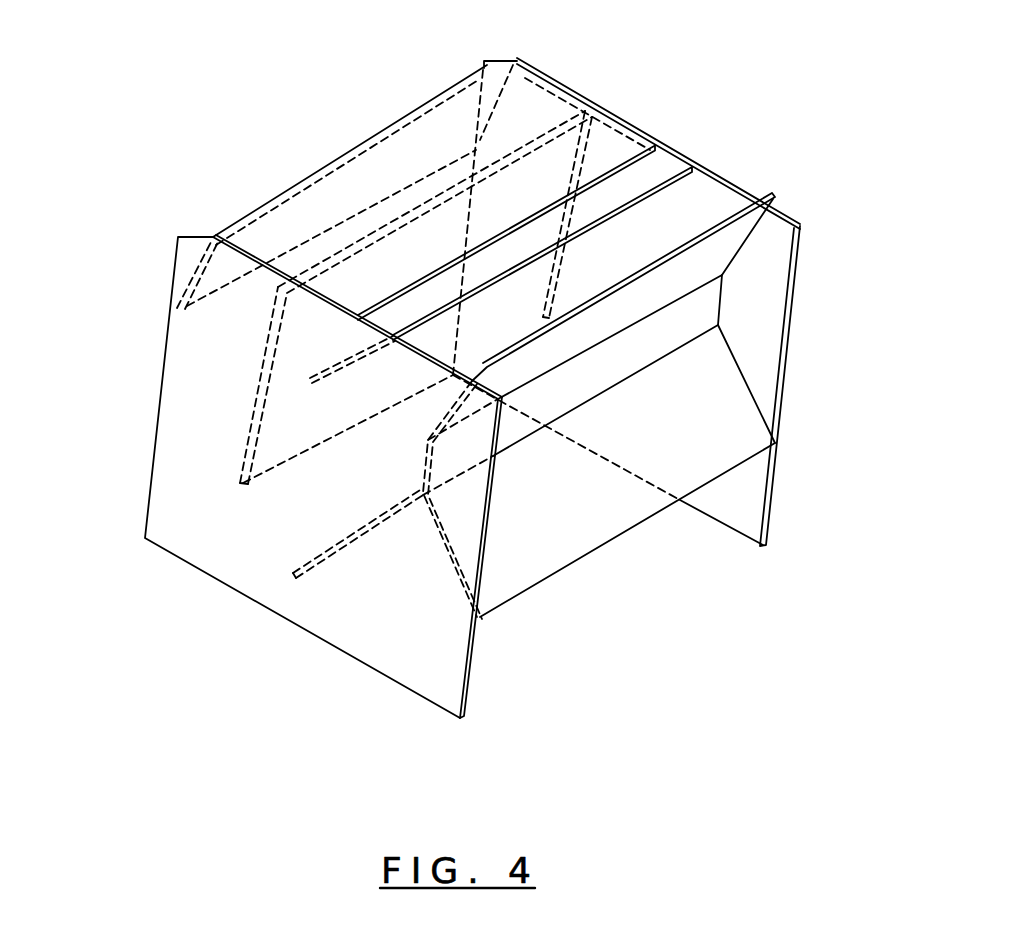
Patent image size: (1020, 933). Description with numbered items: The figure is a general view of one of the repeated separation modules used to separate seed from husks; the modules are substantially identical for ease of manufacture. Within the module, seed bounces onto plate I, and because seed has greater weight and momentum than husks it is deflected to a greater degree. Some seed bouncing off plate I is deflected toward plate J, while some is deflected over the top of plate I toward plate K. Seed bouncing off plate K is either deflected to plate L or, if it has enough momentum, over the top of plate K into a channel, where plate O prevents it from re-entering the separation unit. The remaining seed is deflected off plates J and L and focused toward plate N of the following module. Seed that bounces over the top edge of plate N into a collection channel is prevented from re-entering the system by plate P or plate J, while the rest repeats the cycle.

The plate J is at (270, 427).
The plate P is at (315, 192).
The plate N is at (610, 140).
The plate I is at (610, 203).
The plate K is at (683, 267).
The plate L is at (347, 538).
The plate O is at (623, 510).